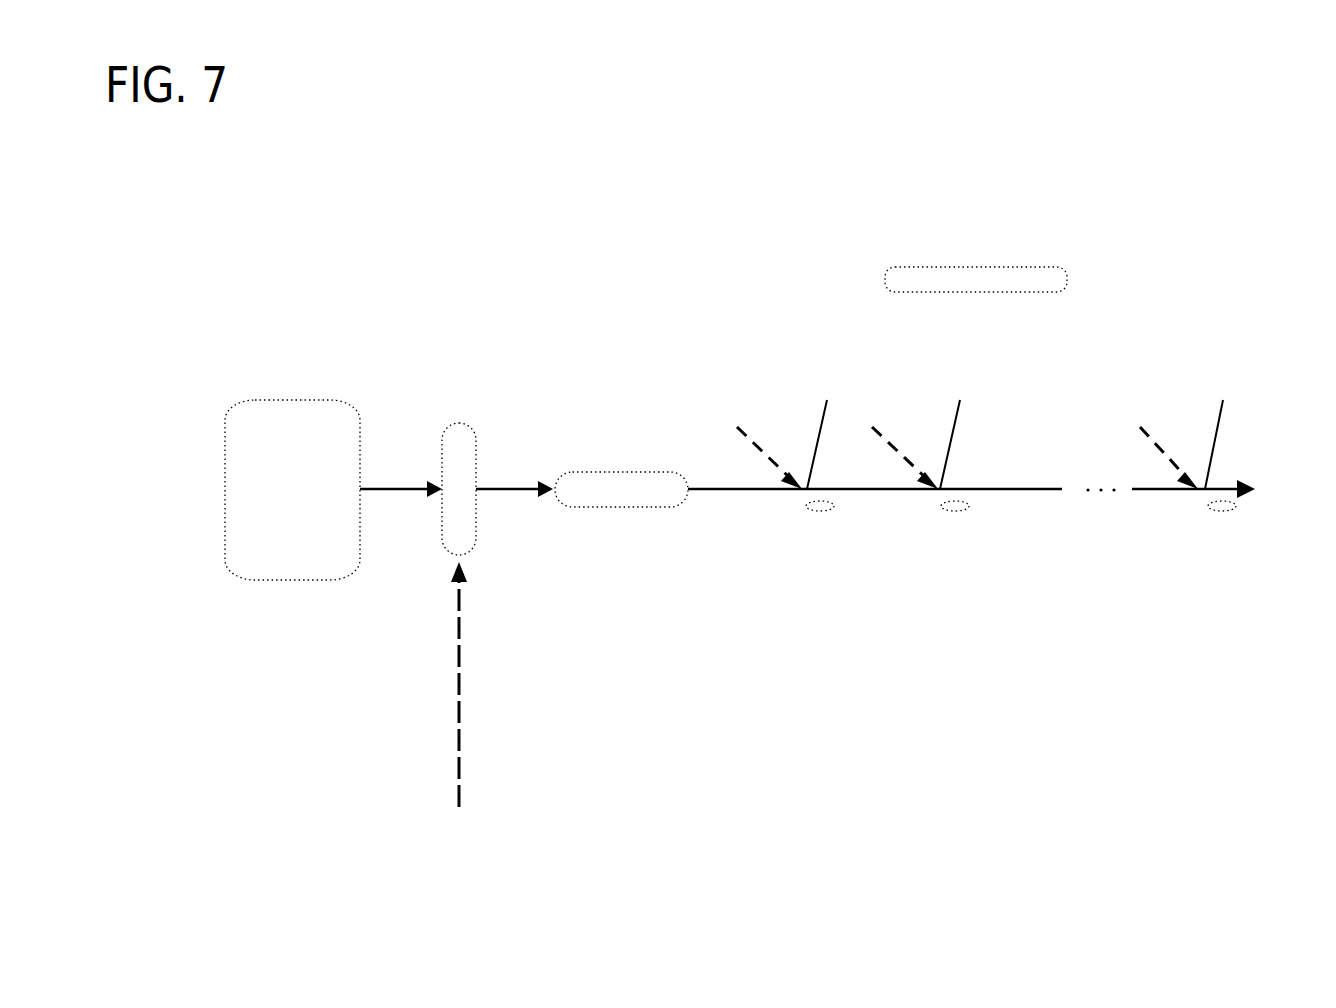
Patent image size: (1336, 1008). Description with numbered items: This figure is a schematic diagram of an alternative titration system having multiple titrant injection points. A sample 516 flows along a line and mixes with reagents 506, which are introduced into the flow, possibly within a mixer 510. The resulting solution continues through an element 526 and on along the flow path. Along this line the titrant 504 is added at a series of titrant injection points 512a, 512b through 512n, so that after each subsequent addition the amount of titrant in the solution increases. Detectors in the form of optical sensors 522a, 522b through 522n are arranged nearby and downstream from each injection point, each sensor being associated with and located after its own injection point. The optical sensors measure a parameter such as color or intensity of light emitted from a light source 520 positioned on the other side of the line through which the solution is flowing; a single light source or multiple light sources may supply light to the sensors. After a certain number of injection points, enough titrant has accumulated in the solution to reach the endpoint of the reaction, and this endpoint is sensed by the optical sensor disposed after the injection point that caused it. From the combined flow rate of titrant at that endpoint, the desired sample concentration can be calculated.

The sample 516 is at (275, 413).
The mixer 510 is at (460, 450).
The reagents 506 is at (459, 803).
The optical element 526 is at (600, 482).
The light source 520 is at (987, 280).
The titrant 504 is at (748, 440).
The titrant injection point 512a is at (833, 427).
The titrant injection point 512b is at (966, 427).
The titrant injection point 512n is at (1140, 427).
The optical sensor 522a is at (820, 510).
The optical sensor 522b is at (955, 510).
The optical sensor 522n is at (1222, 510).